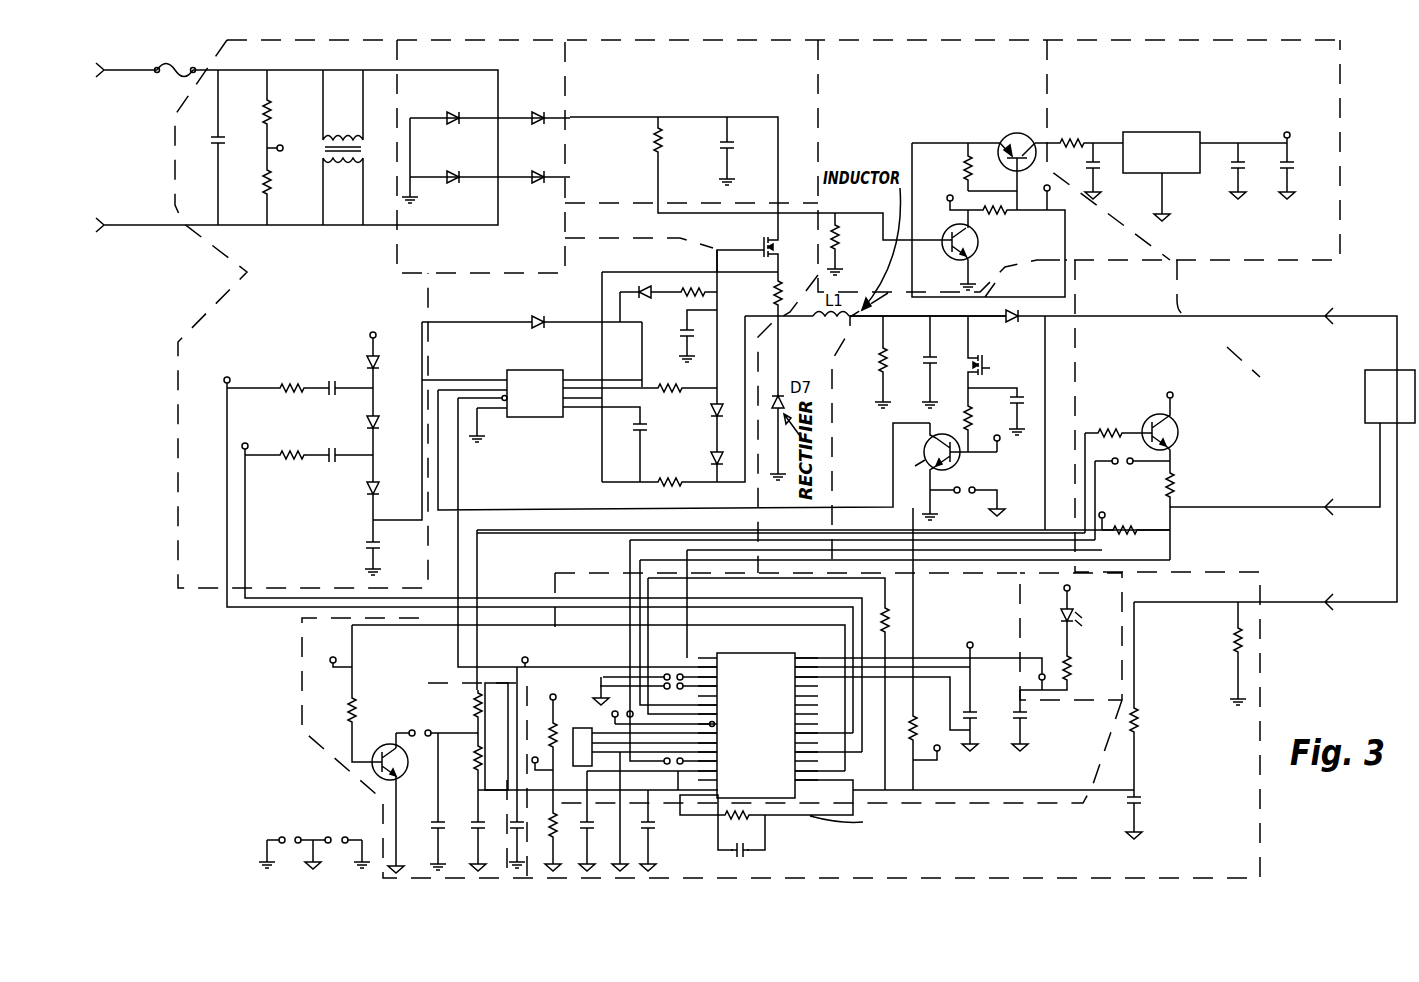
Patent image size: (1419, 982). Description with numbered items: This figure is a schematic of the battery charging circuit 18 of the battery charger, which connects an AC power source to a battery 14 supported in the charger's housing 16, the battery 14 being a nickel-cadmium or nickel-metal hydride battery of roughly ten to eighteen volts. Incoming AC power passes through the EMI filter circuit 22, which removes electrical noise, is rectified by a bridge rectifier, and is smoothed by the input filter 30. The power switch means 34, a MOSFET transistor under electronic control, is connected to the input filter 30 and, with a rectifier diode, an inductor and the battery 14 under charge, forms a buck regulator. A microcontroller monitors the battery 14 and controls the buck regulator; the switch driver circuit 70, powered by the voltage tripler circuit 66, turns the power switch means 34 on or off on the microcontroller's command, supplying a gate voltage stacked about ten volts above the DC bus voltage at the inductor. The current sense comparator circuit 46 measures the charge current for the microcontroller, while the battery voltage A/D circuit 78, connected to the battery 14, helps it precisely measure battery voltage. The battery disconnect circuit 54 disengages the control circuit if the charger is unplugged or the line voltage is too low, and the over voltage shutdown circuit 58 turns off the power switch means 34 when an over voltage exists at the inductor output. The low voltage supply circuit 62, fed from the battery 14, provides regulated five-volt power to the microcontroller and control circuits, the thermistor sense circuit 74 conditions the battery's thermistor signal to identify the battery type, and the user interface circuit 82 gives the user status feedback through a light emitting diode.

The battery 14 is at (1365, 388).
The housing 16 is at (466, 154).
The battery charging circuit 18 is at (1266, 613).
The EMI filter circuit 22 is at (230, 205).
The input filter 30 is at (761, 141).
The power switch means 34 is at (750, 241).
The current sense comparator circuit 46 is at (745, 689).
The battery disconnect circuit 54 is at (964, 185).
The over voltage shutdown circuit 58 is at (930, 483).
The low voltage supply circuit 62 is at (1190, 131).
The voltage tripler circuit 66 is at (537, 517).
The switch driver circuit 70 is at (676, 458).
The thermistor sense circuit 74 is at (1212, 438).
The battery voltage A/D circuit 78 is at (480, 701).
The user interface circuit 82 is at (951, 661).